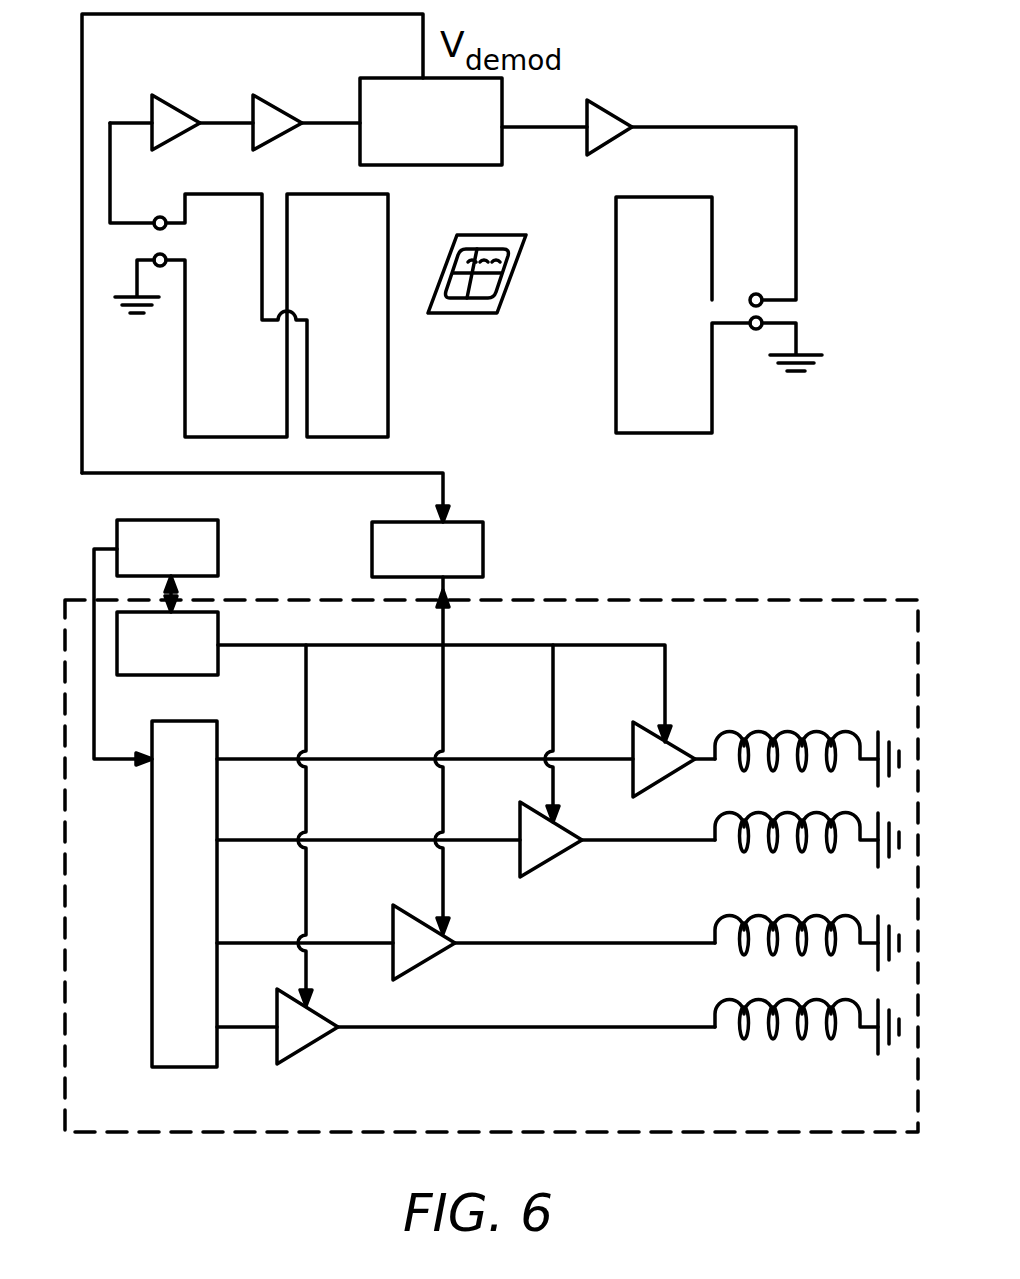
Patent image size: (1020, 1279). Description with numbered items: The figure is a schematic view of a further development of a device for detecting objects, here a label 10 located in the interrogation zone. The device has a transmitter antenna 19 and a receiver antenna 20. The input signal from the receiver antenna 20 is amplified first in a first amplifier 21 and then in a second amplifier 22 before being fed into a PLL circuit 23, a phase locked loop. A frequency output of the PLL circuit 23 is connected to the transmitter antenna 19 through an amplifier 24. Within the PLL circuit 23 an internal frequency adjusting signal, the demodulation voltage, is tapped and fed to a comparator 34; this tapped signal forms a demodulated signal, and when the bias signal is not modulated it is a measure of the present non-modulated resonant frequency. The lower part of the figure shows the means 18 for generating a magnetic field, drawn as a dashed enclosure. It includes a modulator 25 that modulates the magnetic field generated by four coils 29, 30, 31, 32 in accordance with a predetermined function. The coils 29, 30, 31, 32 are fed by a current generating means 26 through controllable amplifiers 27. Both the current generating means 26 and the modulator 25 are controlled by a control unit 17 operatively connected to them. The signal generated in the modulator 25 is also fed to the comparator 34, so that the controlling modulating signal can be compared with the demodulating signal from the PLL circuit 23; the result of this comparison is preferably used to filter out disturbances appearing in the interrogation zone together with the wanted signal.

The label 10 is at (518, 255).
The control unit 17 is at (208, 548).
The means for generating a magnetic field 18 is at (828, 620).
The transmitter antenna 19 is at (712, 400).
The receiver antenna 20 is at (388, 405).
The first amplifier 21 is at (170, 95).
The second amplifier 22 is at (270, 95).
The PLL circuit 23 is at (385, 80).
The amplifier 24 is at (612, 113).
The modulator 25 is at (213, 628).
The current generating means 26 is at (152, 897).
The controllable amplifiers 27 is at (668, 745).
The coil 29 is at (790, 730).
The coil 30 is at (770, 848).
The coil 31 is at (742, 955).
The coil 32 is at (742, 1040).
The comparator 34 is at (470, 550).